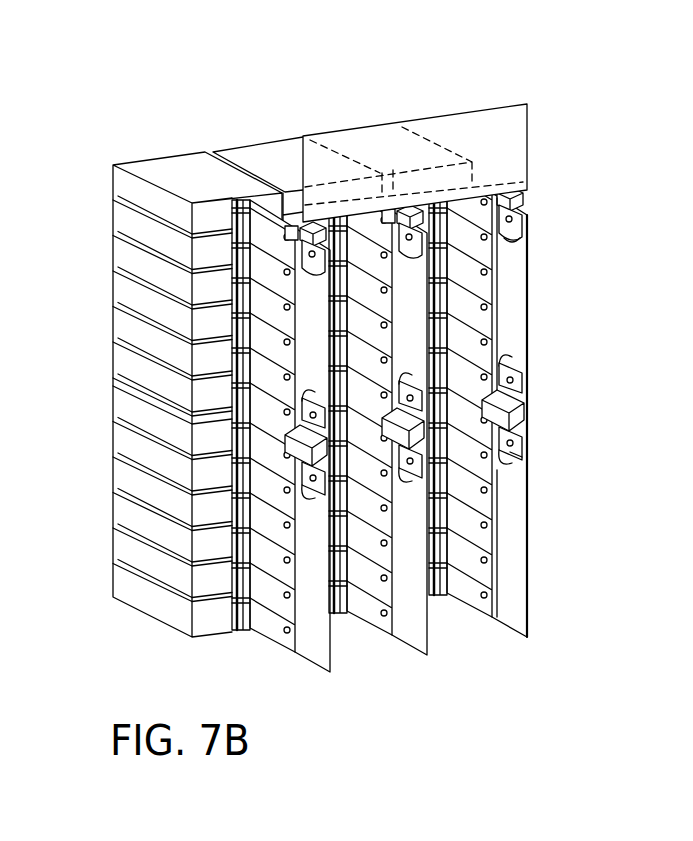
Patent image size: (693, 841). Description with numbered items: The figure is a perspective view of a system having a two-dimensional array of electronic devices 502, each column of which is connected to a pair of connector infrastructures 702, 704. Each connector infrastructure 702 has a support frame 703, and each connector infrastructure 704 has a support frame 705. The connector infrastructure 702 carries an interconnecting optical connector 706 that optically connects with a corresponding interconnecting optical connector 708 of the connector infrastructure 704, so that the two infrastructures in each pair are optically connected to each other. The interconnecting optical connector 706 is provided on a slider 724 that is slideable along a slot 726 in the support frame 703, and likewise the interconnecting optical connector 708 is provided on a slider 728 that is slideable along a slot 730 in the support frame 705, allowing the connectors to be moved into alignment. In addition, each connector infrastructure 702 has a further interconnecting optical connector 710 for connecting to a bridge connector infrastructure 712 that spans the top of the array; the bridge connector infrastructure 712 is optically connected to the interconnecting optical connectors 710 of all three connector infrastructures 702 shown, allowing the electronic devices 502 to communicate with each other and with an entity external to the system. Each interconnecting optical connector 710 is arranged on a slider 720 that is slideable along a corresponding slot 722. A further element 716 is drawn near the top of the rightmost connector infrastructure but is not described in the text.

The electronic device 502 is at (150, 144).
The bridge connector infrastructure 712 is at (457, 140).
The interconnecting optical connector 710 is at (400, 212).
The connector infrastructure 702 is at (410, 341).
The connector infrastructure 704 is at (548, 538).
The top block 716 is at (521, 200).
The slider 720 is at (523, 229).
The slot 722 is at (518, 248).
The support frame 703 is at (508, 330).
The slot 726 is at (515, 362).
The slider 724 is at (523, 385).
The interconnecting optical connector 706 is at (520, 420).
The interconnecting optical connector 708 is at (524, 440).
The slider 728 is at (520, 455).
The slot 730 is at (516, 478).
The support frame 705 is at (510, 594).